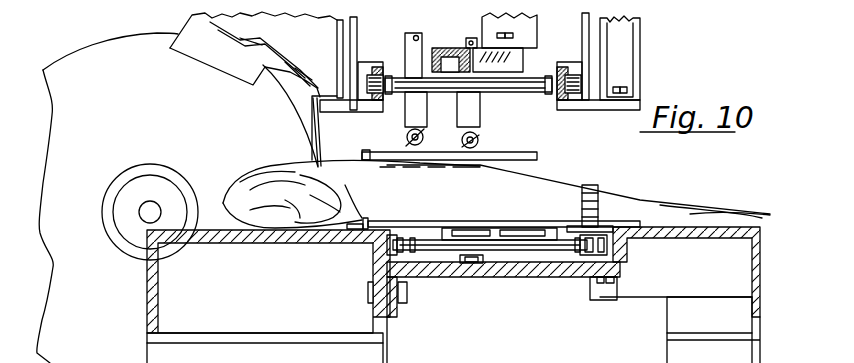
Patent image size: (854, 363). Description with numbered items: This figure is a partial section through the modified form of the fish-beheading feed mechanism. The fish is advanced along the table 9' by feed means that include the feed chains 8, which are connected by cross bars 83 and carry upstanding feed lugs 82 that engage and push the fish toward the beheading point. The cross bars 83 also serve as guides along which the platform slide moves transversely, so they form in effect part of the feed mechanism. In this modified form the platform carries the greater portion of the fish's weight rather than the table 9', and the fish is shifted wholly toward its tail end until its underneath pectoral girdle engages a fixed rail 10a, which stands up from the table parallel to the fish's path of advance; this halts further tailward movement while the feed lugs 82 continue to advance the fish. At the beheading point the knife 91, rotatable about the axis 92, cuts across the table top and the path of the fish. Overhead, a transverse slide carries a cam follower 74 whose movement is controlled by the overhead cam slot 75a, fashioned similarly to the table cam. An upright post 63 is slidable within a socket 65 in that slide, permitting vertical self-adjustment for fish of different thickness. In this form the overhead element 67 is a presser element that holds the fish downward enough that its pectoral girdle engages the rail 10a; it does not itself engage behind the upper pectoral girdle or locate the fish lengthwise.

The feed chain 8 is at (602, 247).
The table 9' is at (575, 241).
The fixed rail 10a is at (367, 220).
The upright post 63 is at (418, 51).
The socket 65 is at (470, 110).
The presser element 67 is at (377, 152).
The cam follower 74 is at (444, 62).
The overhead cam slot 75a is at (517, 58).
The feed lug 82 is at (593, 198).
The cross bar 83 is at (557, 265).
The knife 91 is at (315, 83).
The axis 92 is at (147, 210).